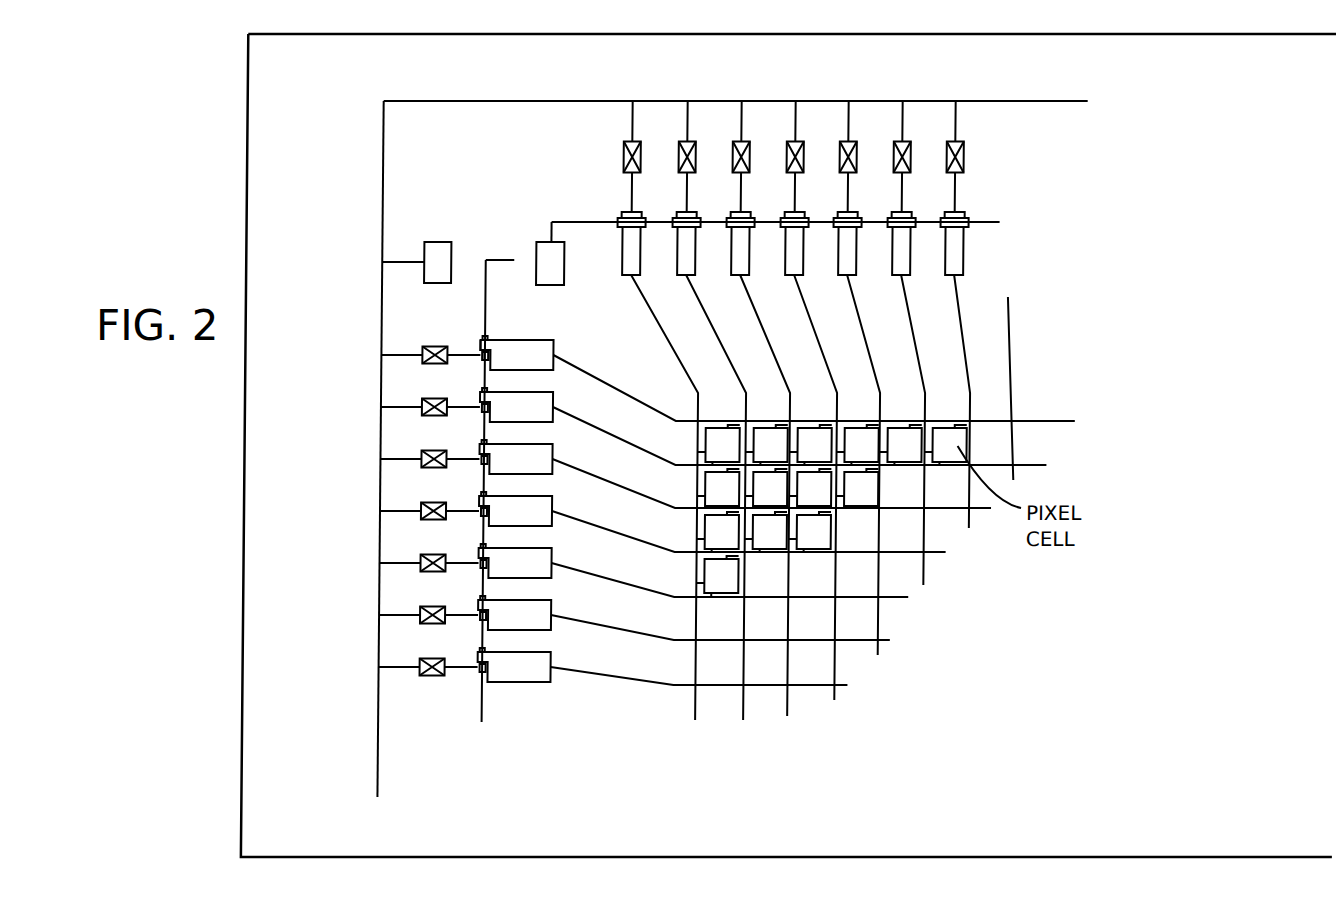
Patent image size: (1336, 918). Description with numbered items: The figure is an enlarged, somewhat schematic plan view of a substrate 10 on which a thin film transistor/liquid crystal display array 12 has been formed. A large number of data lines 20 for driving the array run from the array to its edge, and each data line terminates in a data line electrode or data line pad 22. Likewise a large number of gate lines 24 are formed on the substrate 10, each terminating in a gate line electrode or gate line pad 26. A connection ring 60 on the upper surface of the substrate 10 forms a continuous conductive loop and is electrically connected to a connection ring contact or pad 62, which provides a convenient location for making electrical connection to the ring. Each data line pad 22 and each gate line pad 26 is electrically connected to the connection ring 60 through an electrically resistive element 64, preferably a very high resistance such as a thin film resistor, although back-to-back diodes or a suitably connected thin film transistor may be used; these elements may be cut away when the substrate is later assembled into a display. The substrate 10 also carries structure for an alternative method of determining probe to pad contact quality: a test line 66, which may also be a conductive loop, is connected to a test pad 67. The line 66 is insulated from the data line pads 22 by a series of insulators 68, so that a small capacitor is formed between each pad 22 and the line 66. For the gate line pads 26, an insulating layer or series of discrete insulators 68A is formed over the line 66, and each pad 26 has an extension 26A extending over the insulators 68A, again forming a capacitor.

The substrate 10 is at (244, 139).
The TFT array 12 is at (932, 626).
The data line 20 is at (966, 352).
The data line pad 22 is at (968, 243).
The gate line 24 is at (597, 378).
The gate line pad 26 is at (530, 334).
The extension 26A is at (463, 338).
The connection ring 60 is at (980, 101).
The connection ring contact or pad 62 is at (438, 247).
The electrically resistive element 64 is at (967, 159).
The test line 66 is at (570, 222).
The test pad 67 is at (564, 262).
The insulators 68 is at (642, 214).
The discreet insulators 68A is at (483, 361).